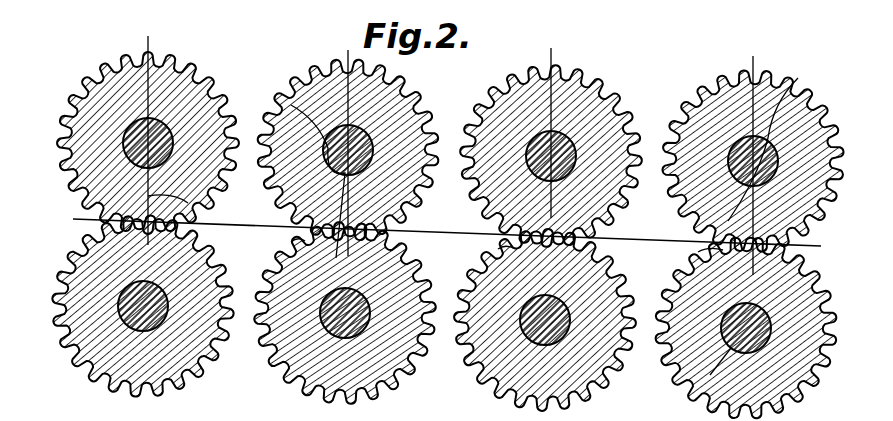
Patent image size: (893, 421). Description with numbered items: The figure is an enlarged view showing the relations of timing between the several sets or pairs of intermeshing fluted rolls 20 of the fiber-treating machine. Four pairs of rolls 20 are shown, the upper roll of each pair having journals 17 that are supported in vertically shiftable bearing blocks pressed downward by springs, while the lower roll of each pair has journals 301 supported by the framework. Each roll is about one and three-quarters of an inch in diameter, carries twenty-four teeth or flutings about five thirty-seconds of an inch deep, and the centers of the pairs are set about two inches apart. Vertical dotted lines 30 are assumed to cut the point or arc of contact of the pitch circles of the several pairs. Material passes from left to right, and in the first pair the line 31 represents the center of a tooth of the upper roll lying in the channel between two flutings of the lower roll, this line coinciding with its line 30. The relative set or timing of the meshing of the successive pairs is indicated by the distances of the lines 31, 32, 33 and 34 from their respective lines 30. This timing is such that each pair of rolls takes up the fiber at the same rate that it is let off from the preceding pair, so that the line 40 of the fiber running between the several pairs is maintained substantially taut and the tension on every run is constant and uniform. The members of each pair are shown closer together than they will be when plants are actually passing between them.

The journals 17 is at (283, 97).
The intermeshing fluted rolls 20 is at (93, 118).
The vertical dotted lines 30 is at (450, 145).
The journals 301 is at (150, 322).
The line 31 is at (180, 195).
The line 32 is at (283, 234).
The line 33 is at (490, 241).
The line 34 is at (690, 244).
The line 40 is at (447, 315).